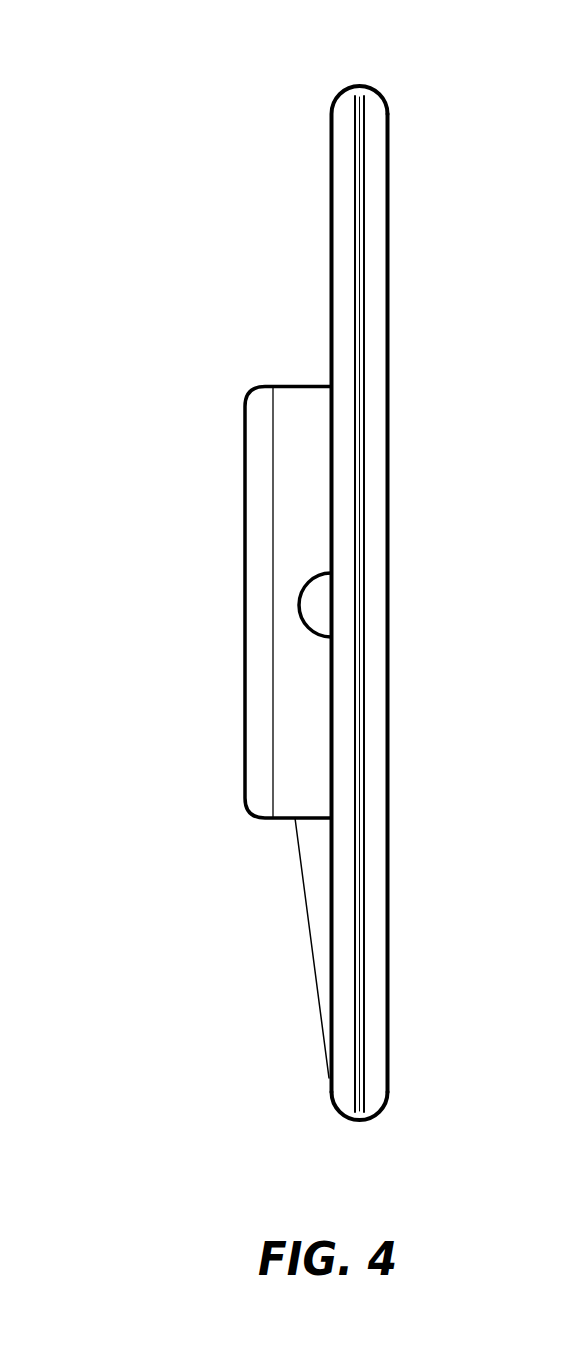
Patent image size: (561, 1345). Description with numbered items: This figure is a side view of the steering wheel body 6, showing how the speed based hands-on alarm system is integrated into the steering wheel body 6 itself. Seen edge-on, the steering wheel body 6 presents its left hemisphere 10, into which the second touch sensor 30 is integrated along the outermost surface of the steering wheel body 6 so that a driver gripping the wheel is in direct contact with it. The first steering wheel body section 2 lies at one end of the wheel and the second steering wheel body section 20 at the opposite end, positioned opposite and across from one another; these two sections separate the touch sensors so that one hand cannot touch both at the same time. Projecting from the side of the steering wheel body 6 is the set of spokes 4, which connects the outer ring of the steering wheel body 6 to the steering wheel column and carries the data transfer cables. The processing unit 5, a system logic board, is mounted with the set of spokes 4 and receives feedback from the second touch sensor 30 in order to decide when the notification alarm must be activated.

The first steering wheel body section 2 is at (361, 85).
The set of spokes 4 is at (307, 606).
The processing unit 5 is at (297, 492).
The steering wheel body 6 is at (136, 358).
The left hemisphere 10 is at (375, 601).
The second steering wheel body section 20 is at (361, 1122).
The second touch sensor 30 is at (355, 216).